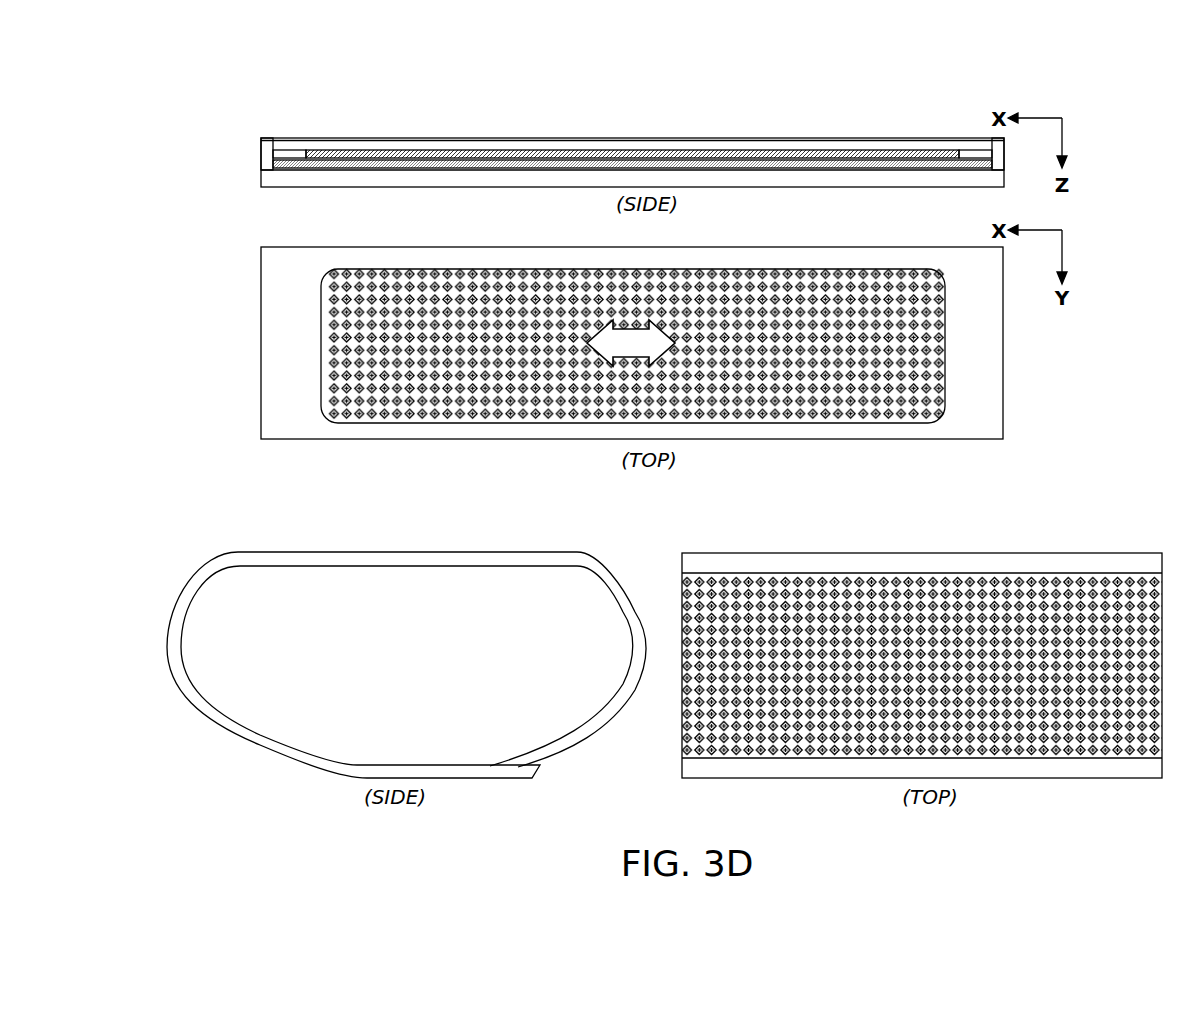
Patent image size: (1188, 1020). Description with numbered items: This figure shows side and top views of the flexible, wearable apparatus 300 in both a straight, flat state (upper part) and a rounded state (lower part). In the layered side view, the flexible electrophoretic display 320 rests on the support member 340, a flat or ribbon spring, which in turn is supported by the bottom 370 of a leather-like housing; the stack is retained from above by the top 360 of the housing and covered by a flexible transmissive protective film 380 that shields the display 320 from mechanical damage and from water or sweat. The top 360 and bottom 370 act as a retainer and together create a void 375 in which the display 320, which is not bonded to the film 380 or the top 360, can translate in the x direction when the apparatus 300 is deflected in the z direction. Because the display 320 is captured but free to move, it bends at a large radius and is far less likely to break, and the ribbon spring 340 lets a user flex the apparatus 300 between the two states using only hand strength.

The flexible, wearable apparatus 300 is at (904, 122).
The flexible electrophoretic display 320 is at (387, 155).
The support member 340 is at (282, 163).
The top of housing 360 is at (843, 140).
The bottom of housing 370 is at (282, 175).
The void 375 is at (285, 152).
The transmissive protective film 380 is at (477, 282).